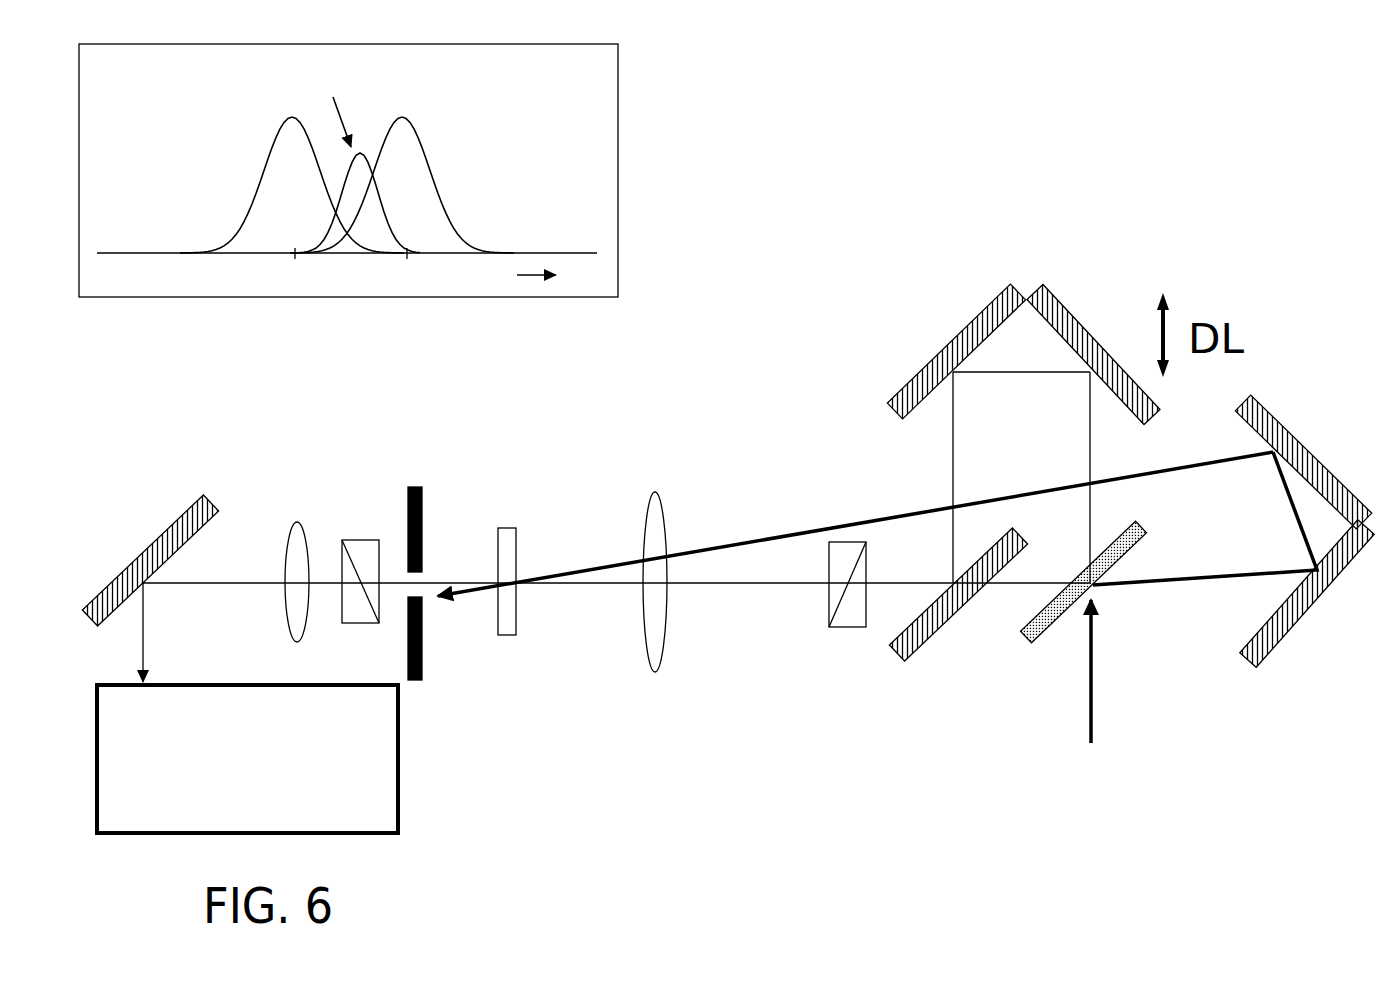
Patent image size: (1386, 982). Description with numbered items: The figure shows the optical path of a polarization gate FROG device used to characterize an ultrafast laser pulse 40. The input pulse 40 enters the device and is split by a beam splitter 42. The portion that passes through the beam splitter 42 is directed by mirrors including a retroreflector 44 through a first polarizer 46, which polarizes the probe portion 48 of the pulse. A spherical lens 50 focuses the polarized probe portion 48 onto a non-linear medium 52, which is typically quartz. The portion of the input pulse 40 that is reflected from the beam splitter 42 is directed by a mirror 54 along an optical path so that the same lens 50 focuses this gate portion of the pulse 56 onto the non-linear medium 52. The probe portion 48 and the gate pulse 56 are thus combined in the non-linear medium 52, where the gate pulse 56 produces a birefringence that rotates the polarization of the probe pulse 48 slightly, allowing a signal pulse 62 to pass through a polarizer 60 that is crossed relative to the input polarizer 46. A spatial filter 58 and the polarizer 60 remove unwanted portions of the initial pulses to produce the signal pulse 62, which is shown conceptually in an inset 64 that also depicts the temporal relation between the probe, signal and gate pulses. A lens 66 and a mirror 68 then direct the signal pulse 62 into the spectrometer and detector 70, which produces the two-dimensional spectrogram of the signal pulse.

The ultrafast laser pulse 40 is at (1105, 717).
The beam splitter 42 is at (1050, 635).
The retroreflector 44 is at (913, 355).
The first polarizer 46 is at (843, 637).
The probe portion 48 is at (742, 595).
The spherical lens 50 is at (650, 483).
The non-linear medium 52 is at (503, 520).
The mirror 54 is at (1300, 423).
The gate portion of the pulse 56 is at (788, 520).
The spatial filter 58 is at (413, 467).
The polarizer 60 is at (360, 523).
The signal pulse 62 is at (268, 577).
The inset 64 is at (620, 88).
The lens 66 is at (297, 510).
The mirror 68 is at (158, 517).
The spectrometer and detector 70 is at (408, 780).